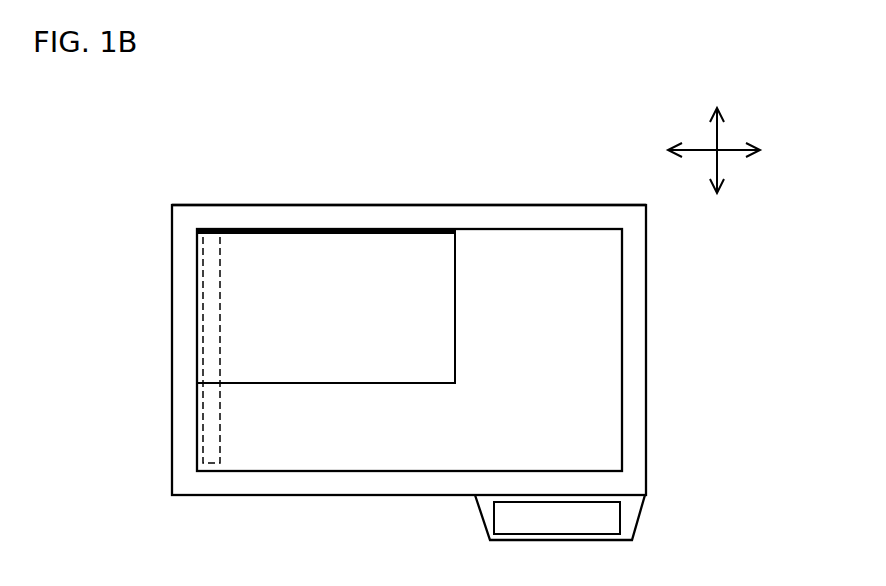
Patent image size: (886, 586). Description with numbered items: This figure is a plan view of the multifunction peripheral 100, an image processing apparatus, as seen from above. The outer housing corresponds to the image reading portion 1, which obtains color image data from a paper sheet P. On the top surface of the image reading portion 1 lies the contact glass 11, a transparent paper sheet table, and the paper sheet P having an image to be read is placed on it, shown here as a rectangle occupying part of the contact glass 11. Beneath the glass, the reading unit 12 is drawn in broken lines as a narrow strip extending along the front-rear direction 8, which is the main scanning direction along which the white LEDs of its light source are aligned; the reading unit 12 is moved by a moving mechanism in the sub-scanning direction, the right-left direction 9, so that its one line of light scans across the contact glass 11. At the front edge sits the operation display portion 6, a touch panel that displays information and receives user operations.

The multifunction peripheral 100 is at (130, 231).
The image reading portion 1 is at (646, 283).
The contact glass 11 is at (607, 263).
The paper sheet P is at (455, 285).
The reading unit 12 is at (197, 414).
The operation display portion 6 is at (633, 522).
The front-rear direction 8 is at (718, 140).
The right-left direction 9 is at (700, 152).